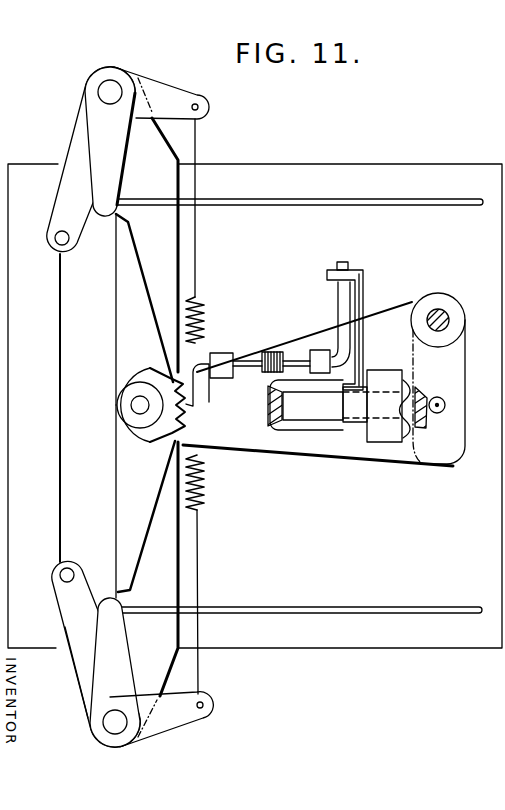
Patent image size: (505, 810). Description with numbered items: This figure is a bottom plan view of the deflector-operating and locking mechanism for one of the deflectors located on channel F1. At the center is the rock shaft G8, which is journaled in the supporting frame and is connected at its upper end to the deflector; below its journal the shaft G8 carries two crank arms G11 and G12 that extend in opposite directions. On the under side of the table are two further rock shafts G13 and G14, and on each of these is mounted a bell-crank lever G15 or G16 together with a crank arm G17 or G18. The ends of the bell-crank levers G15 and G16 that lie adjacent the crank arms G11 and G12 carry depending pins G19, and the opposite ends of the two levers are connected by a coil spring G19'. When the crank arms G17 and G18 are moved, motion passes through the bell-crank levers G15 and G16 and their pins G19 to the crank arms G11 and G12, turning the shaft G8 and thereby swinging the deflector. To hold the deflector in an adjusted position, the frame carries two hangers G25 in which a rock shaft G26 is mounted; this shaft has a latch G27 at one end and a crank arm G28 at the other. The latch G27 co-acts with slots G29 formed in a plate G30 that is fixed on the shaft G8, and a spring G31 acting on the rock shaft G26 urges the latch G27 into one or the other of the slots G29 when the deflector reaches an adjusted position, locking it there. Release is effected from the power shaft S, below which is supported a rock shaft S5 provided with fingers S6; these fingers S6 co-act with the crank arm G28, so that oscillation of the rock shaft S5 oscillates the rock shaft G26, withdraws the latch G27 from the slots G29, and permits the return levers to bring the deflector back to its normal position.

The channel F1 is at (348, 170).
The rock shaft G8 is at (133, 400).
The crank arm G11 is at (147, 274).
The crank arm G12 is at (117, 490).
The rock shaft G13 is at (100, 83).
The rock shaft G14 is at (112, 723).
The bell-crank lever G15 is at (75, 153).
The bell-crank lever G16 is at (80, 657).
The crank arm G17 is at (133, 148).
The crank arm G18 is at (137, 667).
The depending pins G19 is at (42, 406).
The coil spring G19' is at (224, 296).
The hangers G25 is at (263, 395).
The rock shaft G26 is at (243, 350).
The latch G27 is at (198, 413).
The crank arm G28 is at (340, 313).
The slots G29 is at (168, 388).
The plate G30 is at (183, 447).
The spring G31 is at (268, 398).
The power shaft S is at (312, 430).
The rock shaft S5 is at (323, 407).
The fingers S6 is at (366, 305).